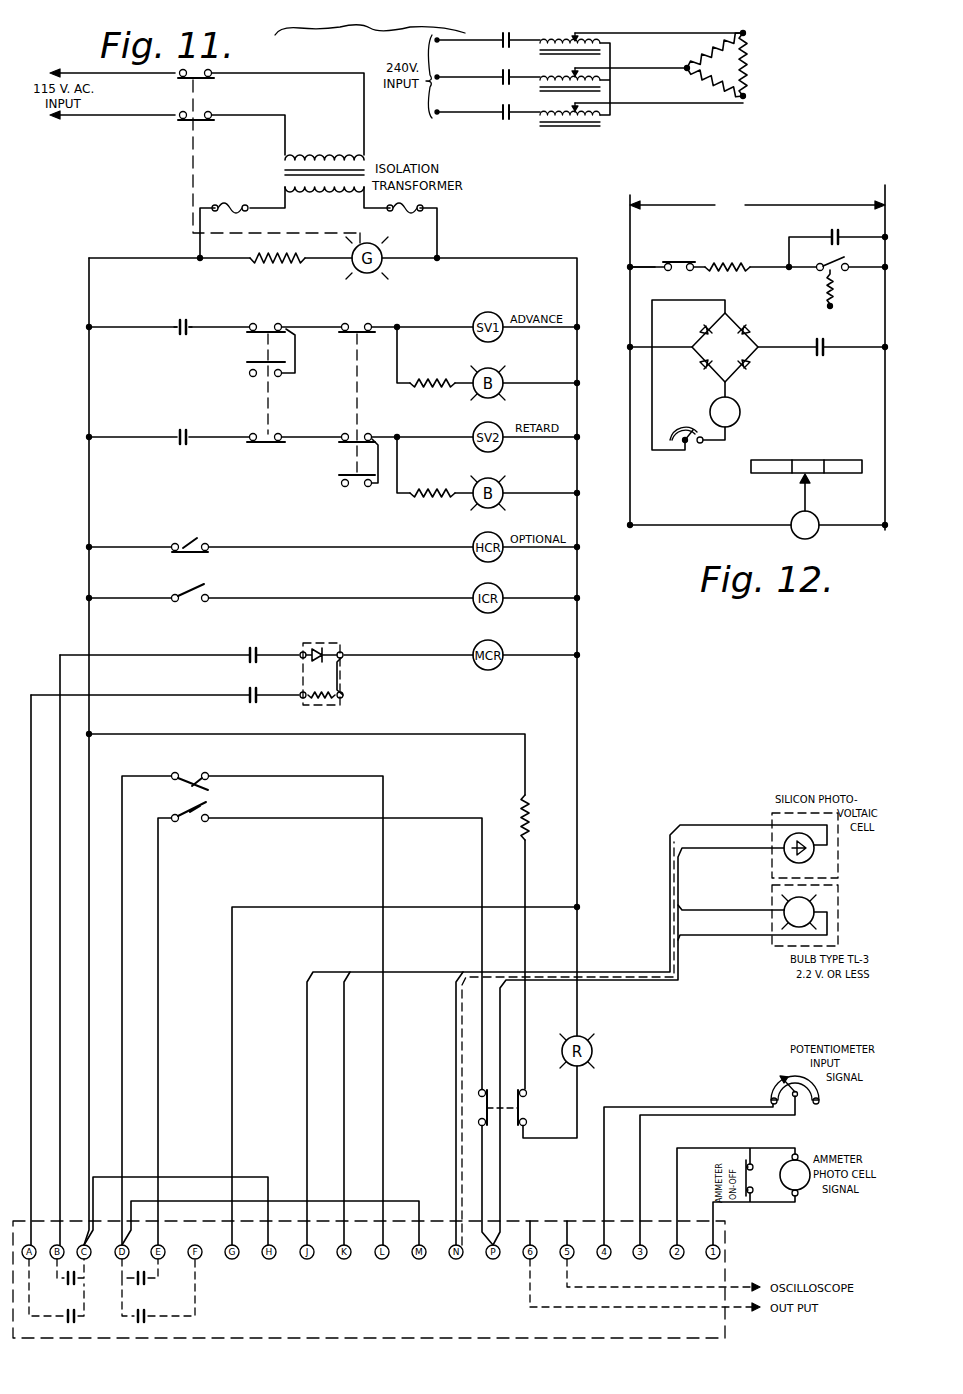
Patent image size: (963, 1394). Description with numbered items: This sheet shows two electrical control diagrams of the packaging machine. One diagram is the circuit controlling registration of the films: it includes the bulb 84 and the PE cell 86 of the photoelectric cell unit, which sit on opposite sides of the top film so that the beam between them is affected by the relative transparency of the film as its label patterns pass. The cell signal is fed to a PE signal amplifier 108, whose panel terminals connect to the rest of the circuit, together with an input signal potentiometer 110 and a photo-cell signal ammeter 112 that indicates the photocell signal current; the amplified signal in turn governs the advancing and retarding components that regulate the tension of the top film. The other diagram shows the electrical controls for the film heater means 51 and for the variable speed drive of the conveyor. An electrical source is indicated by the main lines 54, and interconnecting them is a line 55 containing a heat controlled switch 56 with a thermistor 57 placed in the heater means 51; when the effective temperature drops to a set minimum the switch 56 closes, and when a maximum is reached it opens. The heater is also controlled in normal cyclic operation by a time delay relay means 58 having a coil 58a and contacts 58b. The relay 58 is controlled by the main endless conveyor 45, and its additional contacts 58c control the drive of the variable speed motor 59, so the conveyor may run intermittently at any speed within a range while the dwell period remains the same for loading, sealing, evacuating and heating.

In FIG. 11, the PE cell 86 is at (788, 842).
In FIG. 11, the bulb 84 is at (792, 926).
In FIG. 11, the input signal potentiometer 110 is at (775, 1086).
In FIG. 11, the photo-cell signal ammeter 112 is at (804, 1190).
In FIG. 11, the PE signal amplifier 108 is at (345, 1336).
In FIG. 12, the main lines 54 is at (757, 206).
In FIG. 12, the line 55 is at (650, 265).
In FIG. 12, the heat controlled switch 56 is at (685, 263).
In FIG. 12, the heater means 51 is at (731, 264).
In FIG. 12, the contacts 58b is at (828, 238).
In FIG. 12, the thermistor 57 is at (833, 292).
In FIG. 12, the time delay relay means 58 is at (820, 531).
In FIG. 12, the additional contacts 58c is at (818, 358).
In FIG. 12, the variable speed motor 59 is at (741, 419).
In FIG. 12, the main endless conveyor 45 is at (837, 460).
In FIG. 12, the coil 58a is at (792, 516).